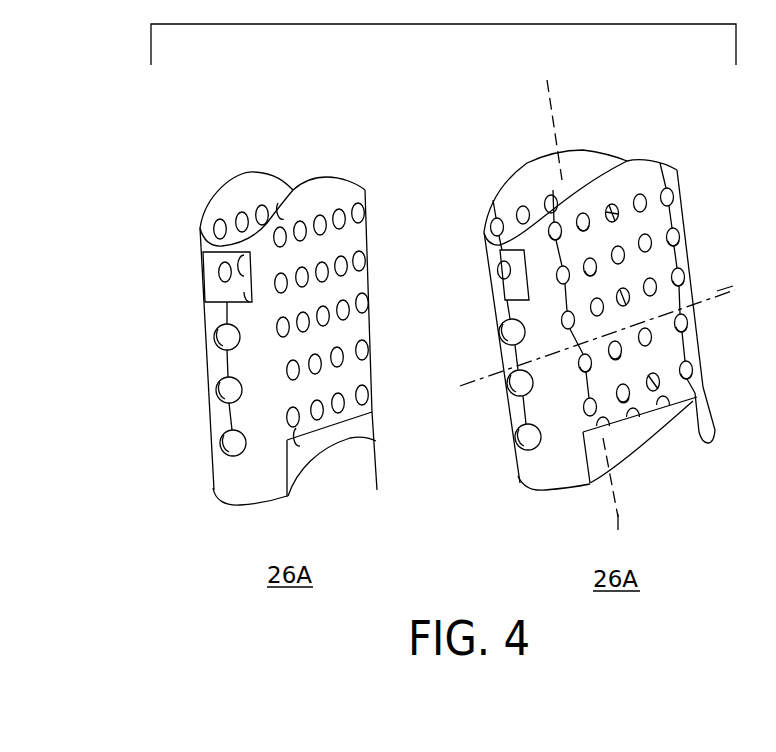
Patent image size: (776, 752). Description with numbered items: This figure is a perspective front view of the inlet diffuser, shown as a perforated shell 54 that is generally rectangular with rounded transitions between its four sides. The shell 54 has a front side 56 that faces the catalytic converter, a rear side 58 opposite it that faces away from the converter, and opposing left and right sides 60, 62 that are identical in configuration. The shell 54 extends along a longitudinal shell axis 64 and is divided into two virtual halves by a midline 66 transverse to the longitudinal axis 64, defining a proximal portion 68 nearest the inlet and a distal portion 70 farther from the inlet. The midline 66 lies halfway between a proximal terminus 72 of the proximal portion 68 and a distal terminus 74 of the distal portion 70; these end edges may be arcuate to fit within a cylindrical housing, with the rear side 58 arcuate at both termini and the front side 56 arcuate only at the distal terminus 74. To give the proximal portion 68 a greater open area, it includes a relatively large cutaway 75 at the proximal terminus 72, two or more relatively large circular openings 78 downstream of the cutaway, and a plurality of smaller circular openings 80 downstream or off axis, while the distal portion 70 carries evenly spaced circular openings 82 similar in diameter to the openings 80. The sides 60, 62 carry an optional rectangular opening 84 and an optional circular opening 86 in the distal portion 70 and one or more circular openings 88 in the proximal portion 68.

The perforated shell 54 is at (372, 274).
The front side 56 is at (653, 217).
The rear side 58 is at (573, 170).
The left side 60 is at (270, 478).
The right side 62 is at (360, 433).
The longitudinal shell axis 64 is at (620, 523).
The midline 66 is at (722, 283).
The proximal portion 68 is at (712, 418).
The distal portion 70 is at (343, 200).
The proximal terminus 72 is at (378, 490).
The distal terminus 74 is at (317, 180).
The large cutaway 75 is at (315, 447).
The large circular openings 78 is at (698, 330).
The smaller circular openings 80 is at (580, 367).
The circular openings 82 is at (657, 280).
The rectangular opening 84 is at (218, 284).
The circular opening 86 is at (226, 337).
The circular opening 88 is at (230, 435).